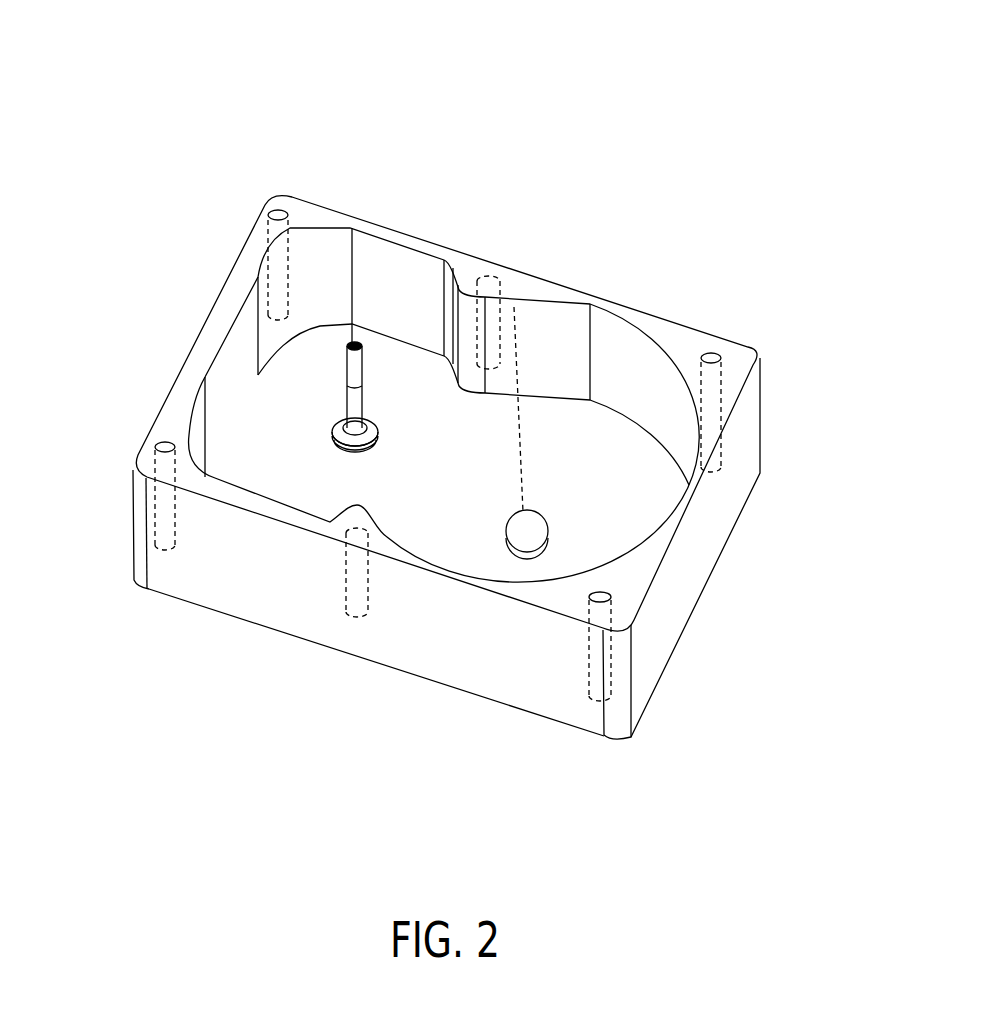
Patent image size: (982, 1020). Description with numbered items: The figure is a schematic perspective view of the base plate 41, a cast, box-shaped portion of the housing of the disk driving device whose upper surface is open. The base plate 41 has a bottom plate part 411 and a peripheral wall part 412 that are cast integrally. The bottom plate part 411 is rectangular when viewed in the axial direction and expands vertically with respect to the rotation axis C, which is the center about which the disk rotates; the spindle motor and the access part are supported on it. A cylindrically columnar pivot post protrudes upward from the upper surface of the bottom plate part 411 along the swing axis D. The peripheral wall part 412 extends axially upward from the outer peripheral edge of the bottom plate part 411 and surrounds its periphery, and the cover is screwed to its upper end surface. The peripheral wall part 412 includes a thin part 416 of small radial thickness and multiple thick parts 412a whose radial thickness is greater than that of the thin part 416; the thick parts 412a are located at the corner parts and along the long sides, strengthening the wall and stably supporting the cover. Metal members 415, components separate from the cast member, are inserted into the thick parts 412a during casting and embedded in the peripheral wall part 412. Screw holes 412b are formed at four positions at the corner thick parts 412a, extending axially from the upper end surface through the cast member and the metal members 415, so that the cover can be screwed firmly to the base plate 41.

The base plate 41 is at (695, 87).
The bottom plate part 411 is at (258, 465).
The peripheral wall part 412 is at (168, 413).
The thick part 412a is at (273, 195).
The screw hole 412b is at (268, 212).
The metal member 415 is at (250, 272).
The thin part 416 is at (633, 317).
The rotation axis C is at (522, 357).
The swing axis D is at (343, 262).